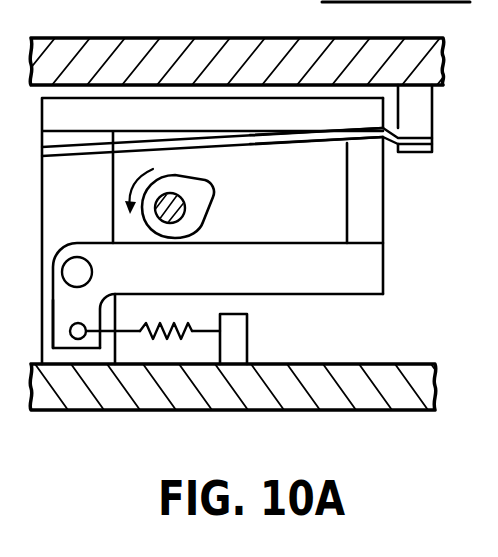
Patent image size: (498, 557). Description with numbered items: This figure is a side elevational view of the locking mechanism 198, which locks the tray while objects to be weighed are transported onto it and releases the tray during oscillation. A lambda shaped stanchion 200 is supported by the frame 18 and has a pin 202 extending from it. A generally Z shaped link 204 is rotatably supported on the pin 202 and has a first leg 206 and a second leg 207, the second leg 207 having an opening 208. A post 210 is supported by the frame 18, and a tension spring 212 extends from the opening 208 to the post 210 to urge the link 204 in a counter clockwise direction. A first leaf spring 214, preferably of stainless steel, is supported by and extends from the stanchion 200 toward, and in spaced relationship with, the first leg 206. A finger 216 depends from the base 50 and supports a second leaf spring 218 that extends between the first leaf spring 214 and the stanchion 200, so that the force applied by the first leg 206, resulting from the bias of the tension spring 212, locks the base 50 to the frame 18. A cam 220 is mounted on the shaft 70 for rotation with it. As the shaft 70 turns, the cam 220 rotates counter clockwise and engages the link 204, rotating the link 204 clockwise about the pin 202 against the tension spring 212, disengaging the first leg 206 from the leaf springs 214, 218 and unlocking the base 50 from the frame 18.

The base 50 is at (127, 38).
The frame 18 is at (410, 403).
The locking mechanism 198 is at (407, 247).
The lambda shaped stanchion 200 is at (95, 165).
The pin 202 is at (108, 203).
The Z shaped link 204 is at (320, 295).
The first leg 206 is at (384, 210).
The second leg 207 is at (78, 312).
The opening 208 is at (82, 340).
The post 210 is at (248, 327).
The tension spring 212 is at (175, 338).
The first leaf spring 214 is at (300, 153).
The finger 216 is at (425, 112).
The second leaf spring 218 is at (391, 140).
The cam 220 is at (210, 205).
The shaft 70 is at (190, 222).